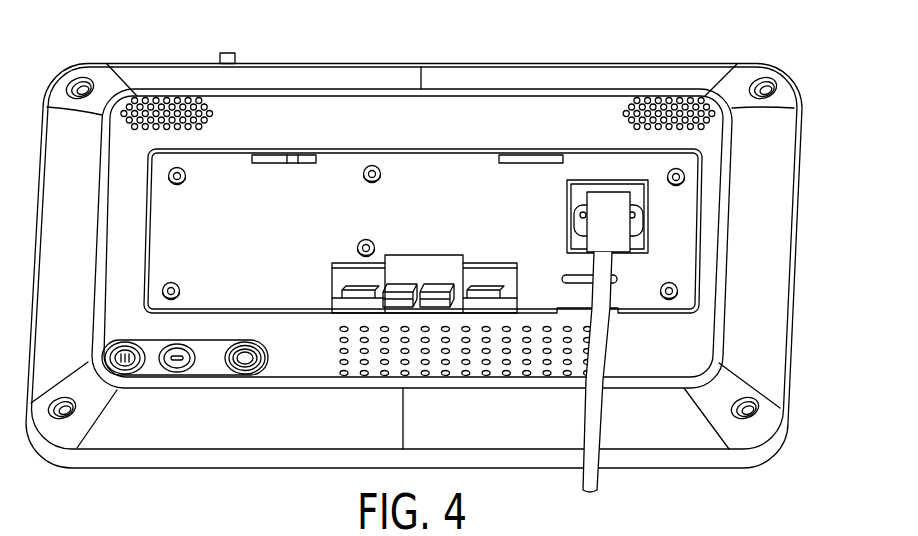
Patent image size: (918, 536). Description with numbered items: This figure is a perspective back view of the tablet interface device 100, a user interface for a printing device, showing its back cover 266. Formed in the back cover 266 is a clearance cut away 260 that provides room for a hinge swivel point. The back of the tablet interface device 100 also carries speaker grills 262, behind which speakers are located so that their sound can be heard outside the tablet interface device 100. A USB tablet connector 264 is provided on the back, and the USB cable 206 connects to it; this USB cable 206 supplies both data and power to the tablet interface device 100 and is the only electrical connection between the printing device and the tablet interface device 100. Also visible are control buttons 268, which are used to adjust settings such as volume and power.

The tablet interface device 100 is at (797, 296).
The USB cable 206 is at (600, 480).
The clearance cut away 260 is at (424, 268).
The speaker grills 262 is at (680, 100).
The USB tablet connector 264 is at (605, 226).
The back cover 266 is at (760, 345).
The control buttons 268 is at (245, 377).